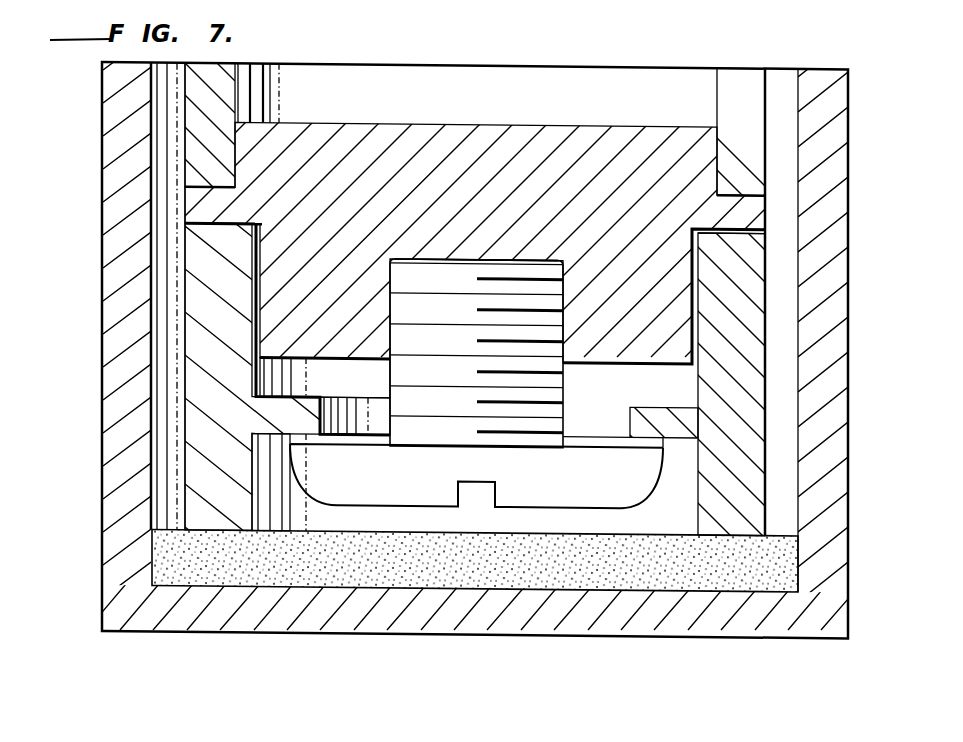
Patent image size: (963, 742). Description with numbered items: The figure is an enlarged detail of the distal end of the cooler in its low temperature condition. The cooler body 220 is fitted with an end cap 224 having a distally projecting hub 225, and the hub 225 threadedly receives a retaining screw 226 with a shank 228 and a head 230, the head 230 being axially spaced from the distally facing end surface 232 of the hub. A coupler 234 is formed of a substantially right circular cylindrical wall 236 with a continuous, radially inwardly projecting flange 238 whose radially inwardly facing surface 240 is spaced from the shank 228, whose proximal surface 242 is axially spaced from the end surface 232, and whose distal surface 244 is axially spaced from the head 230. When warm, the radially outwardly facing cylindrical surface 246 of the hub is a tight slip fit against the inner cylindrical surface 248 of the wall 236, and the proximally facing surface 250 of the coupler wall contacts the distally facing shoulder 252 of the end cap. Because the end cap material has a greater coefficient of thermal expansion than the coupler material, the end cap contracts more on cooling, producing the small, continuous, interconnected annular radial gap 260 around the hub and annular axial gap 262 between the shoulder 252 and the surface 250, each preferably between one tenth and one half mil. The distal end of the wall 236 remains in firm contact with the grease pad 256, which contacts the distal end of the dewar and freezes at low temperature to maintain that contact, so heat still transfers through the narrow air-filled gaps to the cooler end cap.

The cooler body 220 is at (742, 68).
The end cap 224 is at (598, 122).
The end cap hub 225 is at (678, 285).
The retaining screw 226 is at (539, 251).
The shank 228 is at (390, 294).
The screw head 230 is at (652, 456).
The end surface 232 is at (290, 354).
The coupler 234 is at (176, 339).
The cylindrical wall 236 is at (188, 281).
The flange 238 is at (312, 397).
The radially inwardly facing surface 240 is at (630, 402).
The proximal surface 242 is at (270, 385).
The distal surface 244 is at (277, 440).
The radially outwardly facing cylindrical surface 246 is at (705, 241).
The inner cylindrical surface 248 is at (700, 313).
The proximally facing surface 250 is at (259, 239).
The shoulder 252 is at (209, 221).
The grease pad 256 is at (638, 577).
The annular radial gap 260 is at (258, 280).
The annular axial gap 262 is at (178, 224).